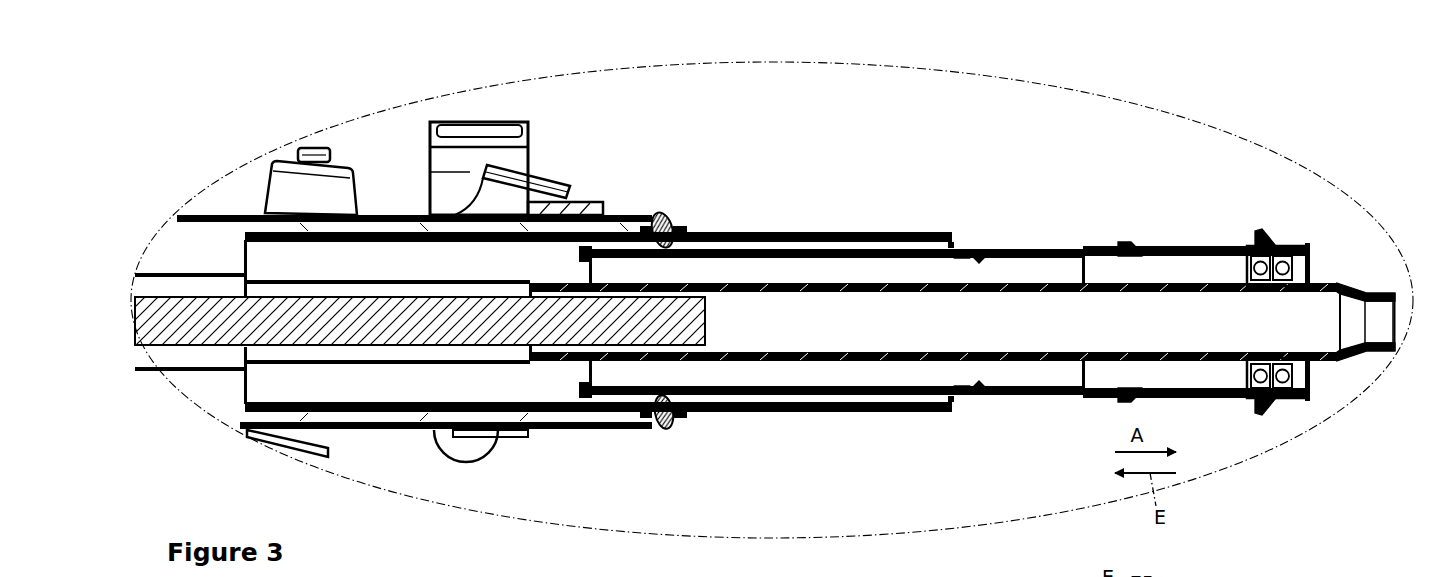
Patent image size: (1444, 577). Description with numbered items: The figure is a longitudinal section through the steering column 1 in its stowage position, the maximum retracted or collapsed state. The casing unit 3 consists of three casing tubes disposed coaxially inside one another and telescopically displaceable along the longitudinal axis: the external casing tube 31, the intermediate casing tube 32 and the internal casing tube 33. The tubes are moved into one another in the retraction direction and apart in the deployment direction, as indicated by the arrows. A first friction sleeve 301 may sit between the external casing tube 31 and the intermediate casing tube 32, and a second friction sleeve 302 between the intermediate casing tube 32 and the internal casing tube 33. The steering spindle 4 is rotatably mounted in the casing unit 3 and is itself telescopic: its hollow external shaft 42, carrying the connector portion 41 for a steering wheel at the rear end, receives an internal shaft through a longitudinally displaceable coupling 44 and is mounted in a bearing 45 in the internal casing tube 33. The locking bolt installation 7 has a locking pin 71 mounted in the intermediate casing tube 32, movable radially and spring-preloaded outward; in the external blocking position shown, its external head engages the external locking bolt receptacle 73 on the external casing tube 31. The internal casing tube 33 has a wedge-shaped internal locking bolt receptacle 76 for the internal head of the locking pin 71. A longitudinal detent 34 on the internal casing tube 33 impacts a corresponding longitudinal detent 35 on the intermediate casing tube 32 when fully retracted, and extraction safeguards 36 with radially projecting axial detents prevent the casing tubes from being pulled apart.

The steering column 1 is at (806, 104).
The casing unit 3 is at (750, 468).
The steering spindle 4 is at (1028, 266).
The locking bolt installation 7 is at (681, 203).
The external casing tube 31 is at (397, 213).
The intermediate casing tube 32 is at (752, 233).
The internal casing tube 33 is at (1002, 250).
The longitudinal detent 34 is at (1243, 243).
The longitudinal detent 35 is at (960, 254).
The extraction safeguards 36 is at (244, 224).
The connector portion 41 is at (1373, 290).
The external shaft 42 is at (1178, 280).
The coupling 44 is at (587, 350).
The bearing 45 is at (1279, 246).
The locking pin 71 is at (663, 214).
The external locking bolt receptacle 73 is at (657, 214).
The internal locking bolt receptacle 76 is at (974, 254).
The first friction sleeve 301 is at (360, 213).
The second friction sleeve 302 is at (892, 233).